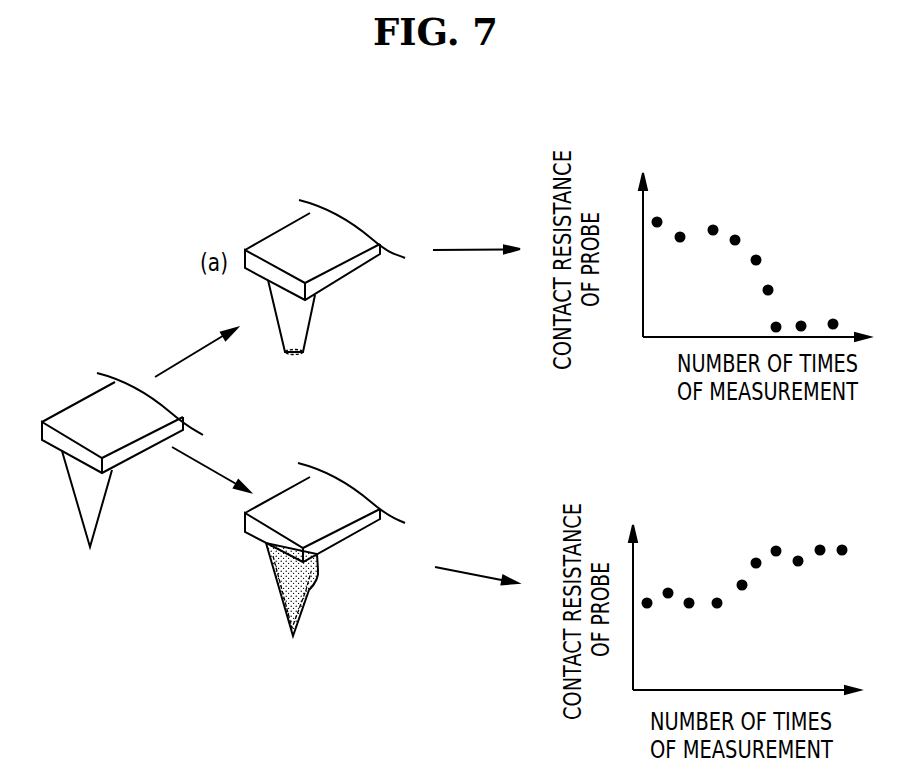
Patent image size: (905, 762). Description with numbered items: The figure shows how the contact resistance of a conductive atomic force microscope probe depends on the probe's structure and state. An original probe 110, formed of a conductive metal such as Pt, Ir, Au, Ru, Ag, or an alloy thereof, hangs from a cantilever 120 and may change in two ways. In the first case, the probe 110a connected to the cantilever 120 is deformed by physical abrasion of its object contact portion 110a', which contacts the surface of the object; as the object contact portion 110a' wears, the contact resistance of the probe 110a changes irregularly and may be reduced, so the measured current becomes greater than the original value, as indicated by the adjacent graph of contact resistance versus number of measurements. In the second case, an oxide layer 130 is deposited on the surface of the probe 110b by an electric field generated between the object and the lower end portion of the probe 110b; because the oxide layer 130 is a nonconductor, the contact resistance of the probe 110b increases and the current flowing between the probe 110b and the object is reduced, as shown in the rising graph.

The cantilever 120 is at (68, 417).
The probe 110 is at (97, 498).
The probe 110a is at (332, 316).
The object contact portion 110a' is at (294, 379).
The probe 110b is at (292, 583).
The oxide layer 130 is at (302, 623).